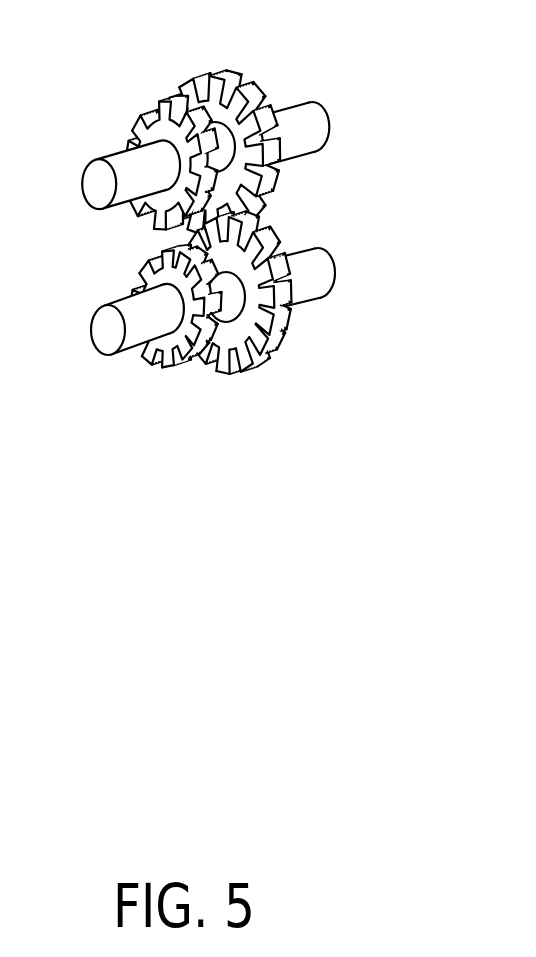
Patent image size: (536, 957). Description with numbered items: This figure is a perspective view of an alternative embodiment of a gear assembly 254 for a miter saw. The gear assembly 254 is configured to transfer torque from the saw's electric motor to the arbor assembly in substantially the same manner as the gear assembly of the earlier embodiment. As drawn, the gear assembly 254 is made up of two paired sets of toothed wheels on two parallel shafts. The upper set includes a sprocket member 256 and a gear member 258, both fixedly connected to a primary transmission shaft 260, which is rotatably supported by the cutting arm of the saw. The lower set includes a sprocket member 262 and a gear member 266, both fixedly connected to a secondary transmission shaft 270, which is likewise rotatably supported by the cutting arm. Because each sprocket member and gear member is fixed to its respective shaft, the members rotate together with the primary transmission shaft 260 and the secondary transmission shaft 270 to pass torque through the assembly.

The gear assembly 254 is at (260, 226).
The sprocket member 256 is at (148, 140).
The gear member 258 is at (211, 100).
The primary transmission shaft 260 is at (308, 123).
The sprocket member 262 is at (167, 348).
The gear member 266 is at (232, 352).
The secondary transmission shaft 270 is at (311, 279).